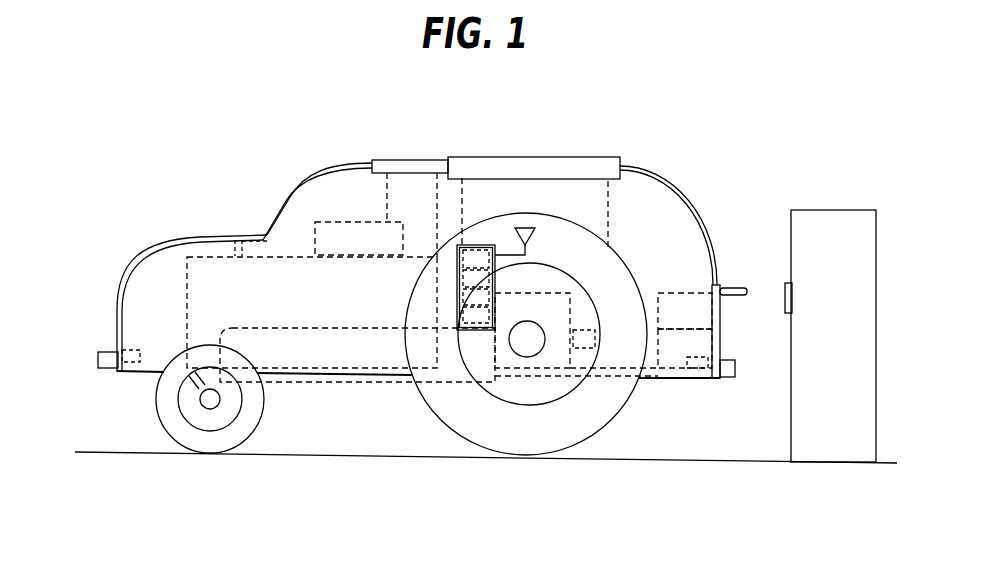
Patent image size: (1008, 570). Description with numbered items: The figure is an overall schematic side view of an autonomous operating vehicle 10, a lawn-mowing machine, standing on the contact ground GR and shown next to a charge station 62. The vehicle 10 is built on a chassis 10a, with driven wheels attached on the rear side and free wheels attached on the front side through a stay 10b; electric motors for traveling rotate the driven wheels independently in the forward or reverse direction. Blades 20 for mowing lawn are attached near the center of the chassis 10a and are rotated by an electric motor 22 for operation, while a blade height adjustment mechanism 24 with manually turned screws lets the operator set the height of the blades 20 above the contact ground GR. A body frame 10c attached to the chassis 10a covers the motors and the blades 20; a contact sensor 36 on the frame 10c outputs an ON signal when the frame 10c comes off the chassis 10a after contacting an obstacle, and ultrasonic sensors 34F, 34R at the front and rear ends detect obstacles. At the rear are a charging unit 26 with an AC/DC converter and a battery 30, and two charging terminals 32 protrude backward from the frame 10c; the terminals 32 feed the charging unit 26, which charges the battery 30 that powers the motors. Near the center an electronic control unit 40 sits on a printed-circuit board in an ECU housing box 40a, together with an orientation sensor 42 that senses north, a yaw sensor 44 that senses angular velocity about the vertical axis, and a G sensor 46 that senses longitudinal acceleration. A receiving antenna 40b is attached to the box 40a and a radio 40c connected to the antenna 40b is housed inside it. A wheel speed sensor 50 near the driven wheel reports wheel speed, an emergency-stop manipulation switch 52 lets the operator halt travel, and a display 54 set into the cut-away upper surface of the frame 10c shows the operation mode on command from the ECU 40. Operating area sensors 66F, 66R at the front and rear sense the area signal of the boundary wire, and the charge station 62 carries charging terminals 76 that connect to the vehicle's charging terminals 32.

The autonomous operating vehicle 10 is at (670, 173).
The chassis 10a is at (660, 379).
The stay 10b is at (200, 398).
The body frame 10c is at (195, 235).
The blades 20 is at (335, 365).
The electric motor for operation 22 is at (357, 303).
The blade height adjustment mechanism 24 is at (372, 248).
The charging unit 26 is at (697, 322).
The battery 30 is at (697, 354).
The charging terminals 32 is at (737, 288).
The ultrasonic sensor 34F is at (106, 352).
The ultrasonic sensor 34R is at (731, 360).
The contact sensor 36 is at (267, 245).
The electronic control unit 40 is at (497, 285).
The ECU housing box 40a is at (497, 314).
The receiving antenna 40b is at (534, 228).
The radio 40c is at (474, 244).
The orientation sensor 42 is at (462, 280).
The yaw sensor 44 is at (462, 308).
The G sensor 46 is at (466, 331).
The wheel speed sensor 50 is at (590, 330).
The manipulation switch 52 is at (414, 160).
The display 54 is at (536, 157).
The charge station 62 is at (845, 345).
The operating area sensor 66F is at (152, 333).
The operating area sensor 66R is at (708, 372).
The charging terminals 76 is at (787, 283).
The contact ground GR is at (658, 462).